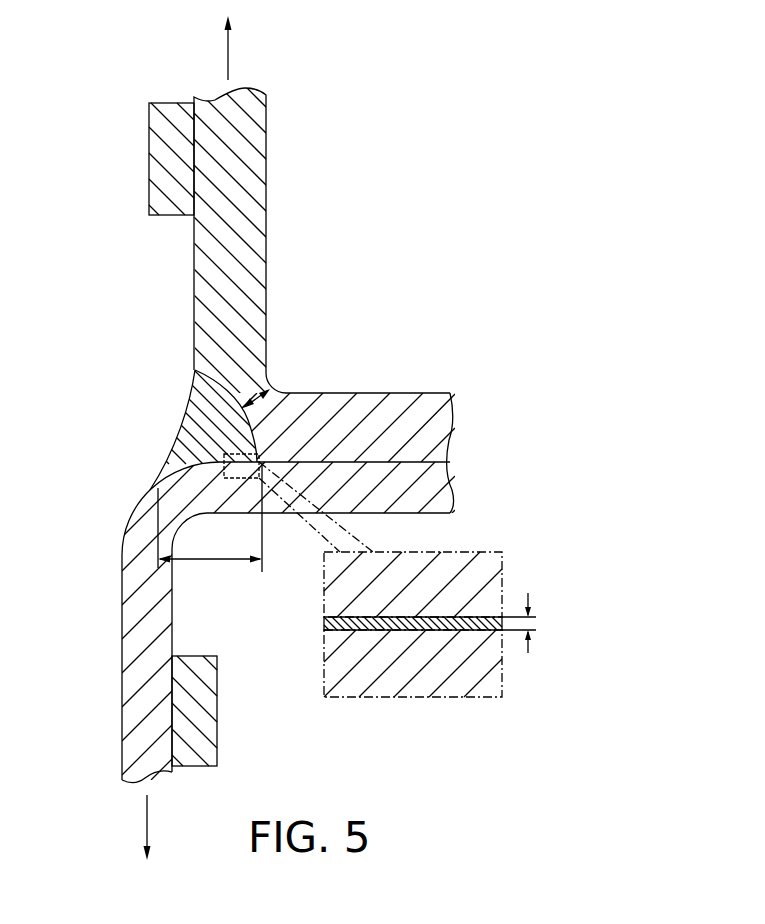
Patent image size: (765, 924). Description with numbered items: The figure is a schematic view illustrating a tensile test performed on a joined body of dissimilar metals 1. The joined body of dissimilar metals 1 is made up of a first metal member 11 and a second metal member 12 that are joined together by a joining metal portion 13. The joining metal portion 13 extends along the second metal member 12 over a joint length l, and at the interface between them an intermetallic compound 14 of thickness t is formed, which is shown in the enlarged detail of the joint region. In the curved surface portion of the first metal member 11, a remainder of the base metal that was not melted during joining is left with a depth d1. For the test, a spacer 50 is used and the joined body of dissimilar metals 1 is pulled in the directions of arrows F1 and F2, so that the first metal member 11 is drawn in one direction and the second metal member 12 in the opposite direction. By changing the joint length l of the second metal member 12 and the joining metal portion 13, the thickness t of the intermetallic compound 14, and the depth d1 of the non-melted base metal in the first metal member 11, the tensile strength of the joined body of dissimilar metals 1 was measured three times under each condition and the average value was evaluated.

The joined body of dissimilar metals 1 is at (427, 203).
The first metal member 11 is at (255, 272).
The second metal member 12 is at (130, 585).
The joining metal portion 13 is at (188, 428).
The intermetallic compound 14 is at (480, 631).
The spacer 50 is at (160, 155).
The arrow F1 is at (229, 58).
The arrow F2 is at (148, 822).
The depth of the remainder of the base metal d1 is at (245, 406).
The thickness of the intermetallic compound t is at (530, 623).
The joint length l is at (213, 560).